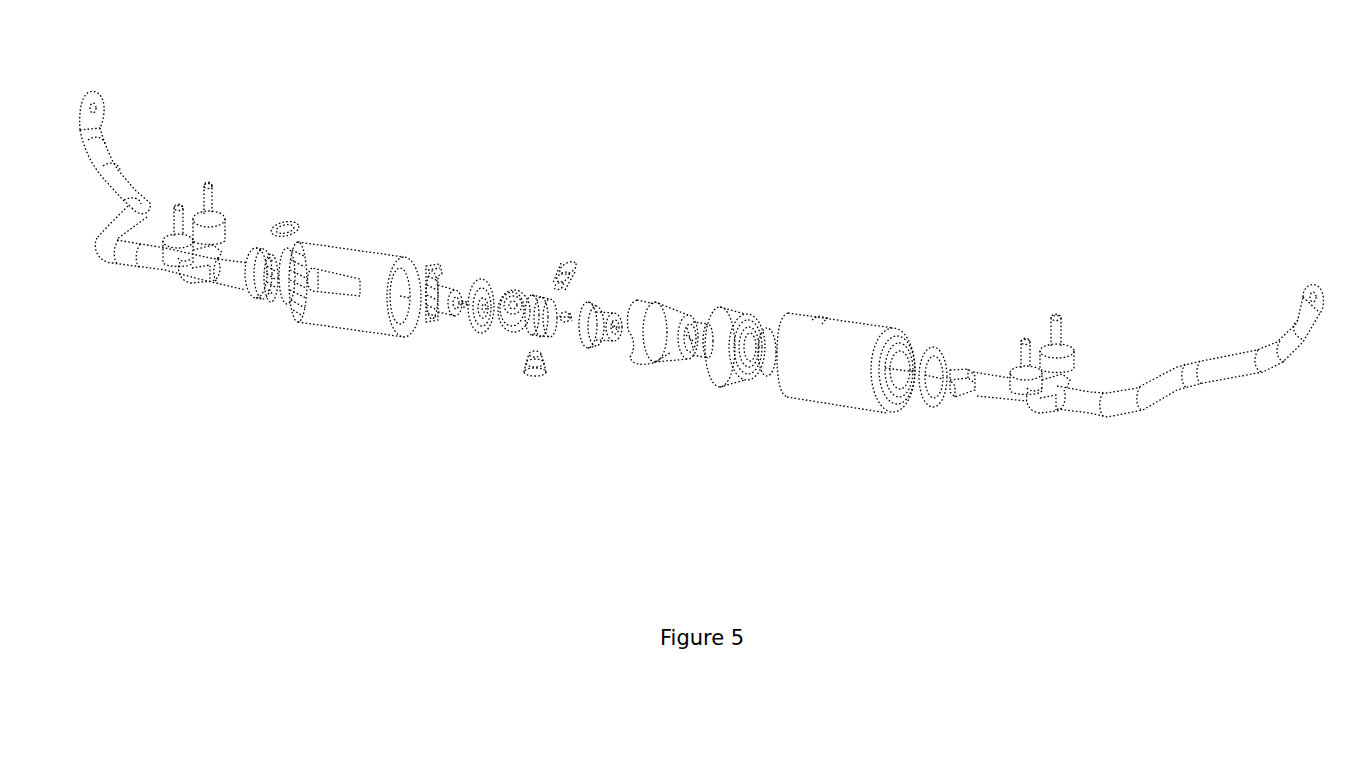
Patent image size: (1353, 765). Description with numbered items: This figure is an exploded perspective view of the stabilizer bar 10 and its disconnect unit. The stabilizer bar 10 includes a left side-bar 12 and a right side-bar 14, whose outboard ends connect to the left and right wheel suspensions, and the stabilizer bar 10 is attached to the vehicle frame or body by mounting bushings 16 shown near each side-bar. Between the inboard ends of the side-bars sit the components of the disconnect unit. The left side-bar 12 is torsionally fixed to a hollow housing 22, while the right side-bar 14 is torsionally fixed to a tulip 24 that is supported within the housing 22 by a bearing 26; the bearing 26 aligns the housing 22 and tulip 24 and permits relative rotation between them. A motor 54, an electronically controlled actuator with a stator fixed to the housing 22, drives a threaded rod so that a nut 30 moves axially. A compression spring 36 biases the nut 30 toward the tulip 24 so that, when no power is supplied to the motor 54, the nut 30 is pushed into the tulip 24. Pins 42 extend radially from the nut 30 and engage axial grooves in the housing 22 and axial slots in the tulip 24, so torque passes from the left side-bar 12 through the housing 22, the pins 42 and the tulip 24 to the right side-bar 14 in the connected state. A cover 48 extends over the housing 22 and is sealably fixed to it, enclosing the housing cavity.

The stabilizer bar 10 is at (958, 153).
The left side-bar 12 is at (127, 180).
The right side-bar 14 is at (1213, 363).
The mounting bushings 16 is at (192, 280).
The hollow housing 22 is at (370, 258).
The tulip 24 is at (647, 310).
The bearing 26 is at (728, 317).
The nut 30 is at (597, 337).
The compression spring 36 is at (517, 327).
The pins 42 is at (573, 260).
The cover 48 is at (853, 333).
The motor 54 is at (443, 320).